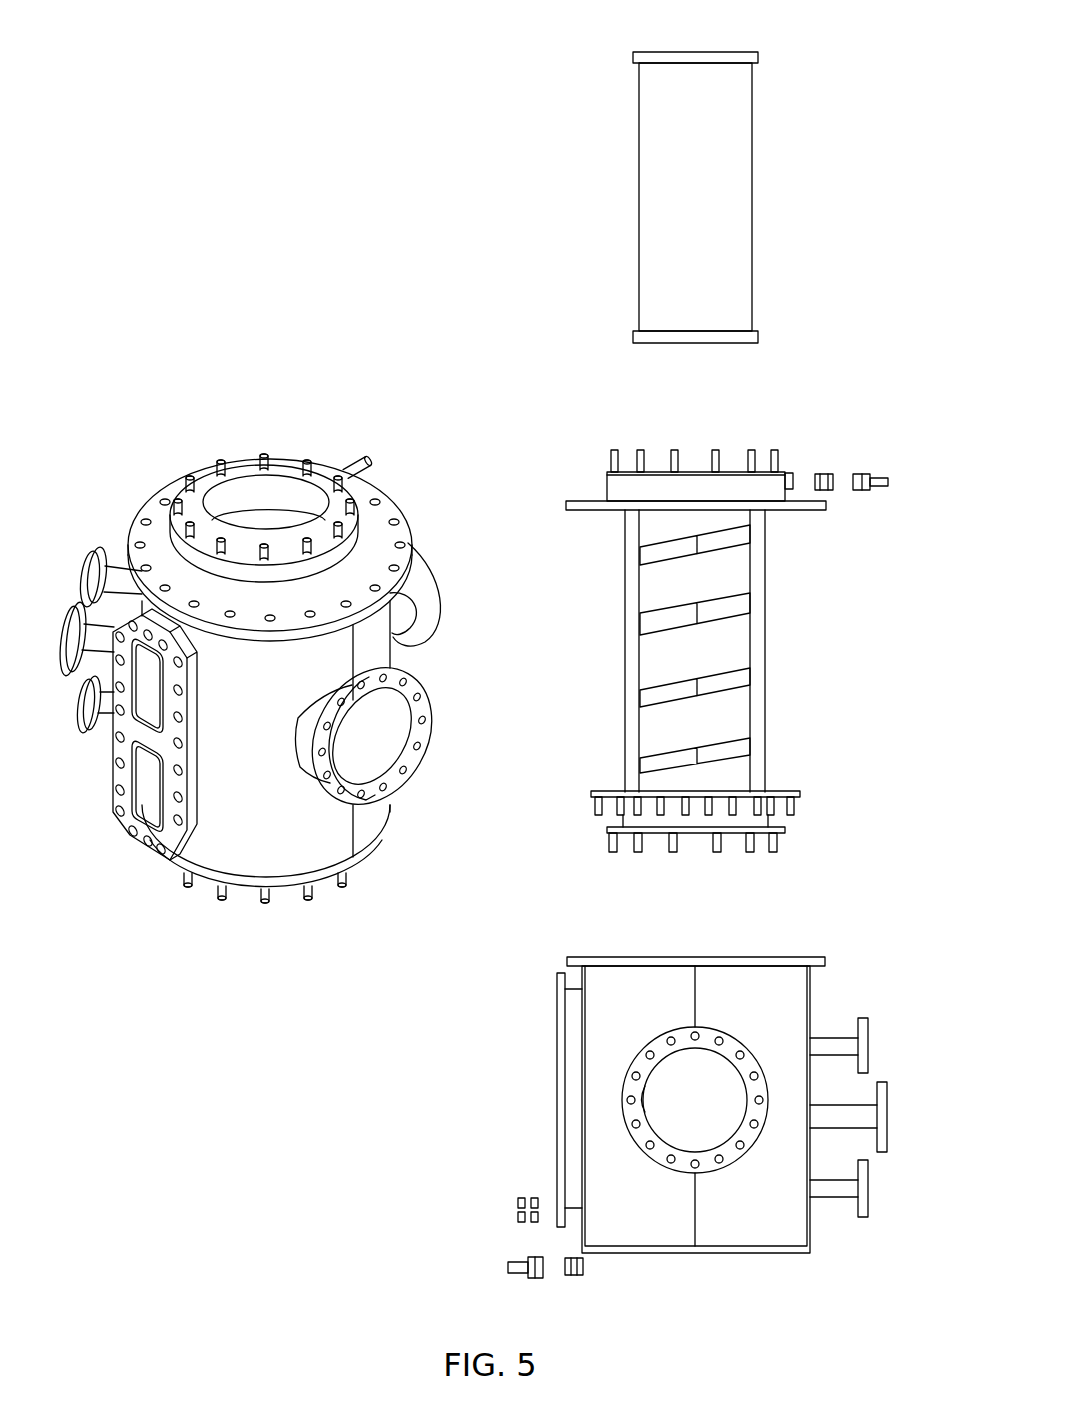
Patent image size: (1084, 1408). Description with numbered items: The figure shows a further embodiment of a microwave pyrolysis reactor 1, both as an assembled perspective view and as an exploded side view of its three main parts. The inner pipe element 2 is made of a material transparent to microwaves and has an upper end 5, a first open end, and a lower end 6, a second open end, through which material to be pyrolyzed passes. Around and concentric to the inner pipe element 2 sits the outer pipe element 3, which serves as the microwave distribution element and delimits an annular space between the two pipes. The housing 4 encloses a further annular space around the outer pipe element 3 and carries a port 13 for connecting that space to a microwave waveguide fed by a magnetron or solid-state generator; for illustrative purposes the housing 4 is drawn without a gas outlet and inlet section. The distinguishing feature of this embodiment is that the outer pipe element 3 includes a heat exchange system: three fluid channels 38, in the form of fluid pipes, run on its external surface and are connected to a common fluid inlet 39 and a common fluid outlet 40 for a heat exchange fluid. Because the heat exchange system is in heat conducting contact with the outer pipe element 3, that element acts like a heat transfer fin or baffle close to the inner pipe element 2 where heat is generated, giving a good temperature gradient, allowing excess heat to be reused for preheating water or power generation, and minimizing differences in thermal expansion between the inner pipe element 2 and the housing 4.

The microwave pyrolysis reactor 1 is at (100, 468).
The inner pipe element 2 is at (773, 215).
The outer pipe element 3 is at (800, 639).
The housing 4 is at (882, 1067).
The upper end 5 is at (692, 52).
The lower end 6 is at (690, 345).
The port 13 is at (438, 702).
The fluid channels 38 is at (626, 622).
The common fluid inlet 39 is at (793, 472).
The common fluid outlet 40 is at (622, 818).